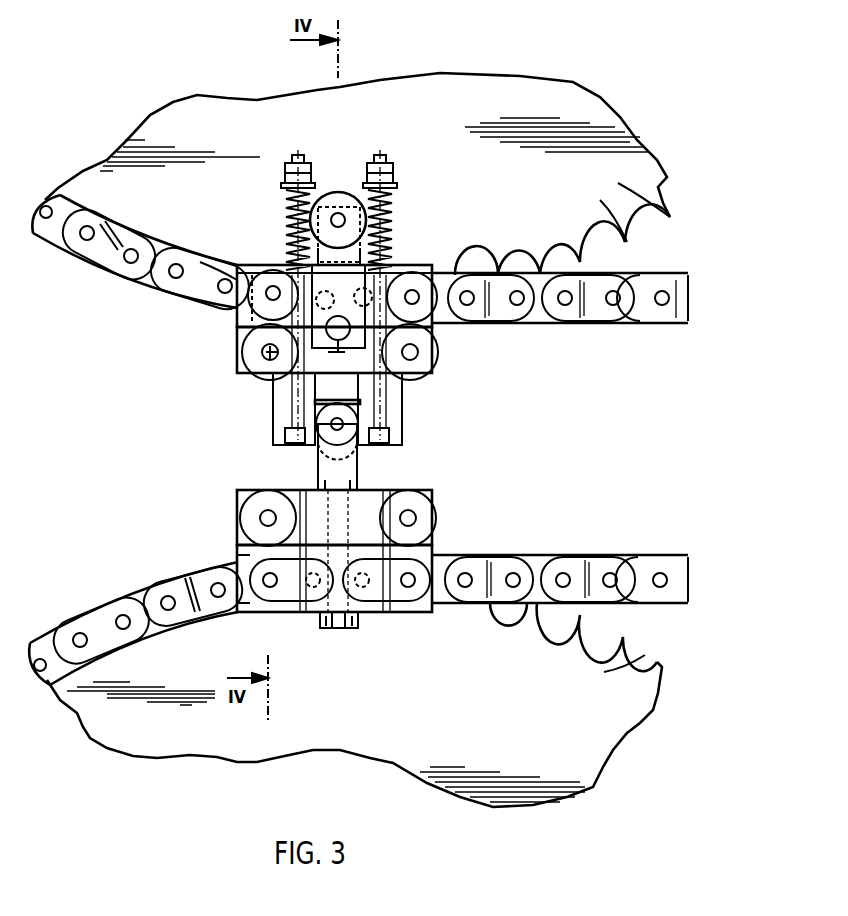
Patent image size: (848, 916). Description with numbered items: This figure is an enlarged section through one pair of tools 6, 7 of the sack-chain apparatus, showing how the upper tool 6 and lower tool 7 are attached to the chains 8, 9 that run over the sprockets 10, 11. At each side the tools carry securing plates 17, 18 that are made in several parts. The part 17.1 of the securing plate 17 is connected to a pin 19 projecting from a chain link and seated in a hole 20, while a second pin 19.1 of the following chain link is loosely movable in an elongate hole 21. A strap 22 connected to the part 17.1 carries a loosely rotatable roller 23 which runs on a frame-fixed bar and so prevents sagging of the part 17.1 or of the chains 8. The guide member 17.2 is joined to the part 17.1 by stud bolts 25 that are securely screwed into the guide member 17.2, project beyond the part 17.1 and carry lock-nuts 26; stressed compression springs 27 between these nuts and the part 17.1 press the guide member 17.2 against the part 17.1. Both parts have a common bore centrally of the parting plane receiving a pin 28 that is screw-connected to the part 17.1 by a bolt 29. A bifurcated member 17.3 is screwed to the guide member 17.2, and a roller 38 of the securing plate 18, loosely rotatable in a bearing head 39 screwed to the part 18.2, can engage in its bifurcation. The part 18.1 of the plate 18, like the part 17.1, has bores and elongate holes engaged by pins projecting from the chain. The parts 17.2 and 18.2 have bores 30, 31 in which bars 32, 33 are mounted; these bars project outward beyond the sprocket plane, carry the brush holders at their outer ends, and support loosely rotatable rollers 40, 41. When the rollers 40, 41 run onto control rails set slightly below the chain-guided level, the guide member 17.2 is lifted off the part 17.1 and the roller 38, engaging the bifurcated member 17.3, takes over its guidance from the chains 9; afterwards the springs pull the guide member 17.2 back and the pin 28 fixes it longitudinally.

The tool 6 is at (470, 146).
The tool 7 is at (470, 684).
The chain 8 is at (645, 324).
The chain 9 is at (606, 558).
The sprocket 10 is at (629, 192).
The sprocket 11 is at (610, 671).
The securing plate 17 is at (552, 382).
The part 17.1 is at (420, 265).
The guide member 17.2 is at (438, 376).
The bifurcated member 17.3 is at (398, 417).
The securing plate 18 is at (534, 514).
The part 18.1 is at (432, 549).
The part 18.2 is at (374, 494).
The pin 19 is at (450, 276).
The second pin 19.1 is at (270, 287).
The hole 20 is at (474, 298).
The elongate hole 21 is at (262, 280).
The strap 22 is at (316, 302).
The roller 23 is at (338, 200).
The stud bolt 25 is at (297, 155).
The lock-nut 26 is at (394, 180).
The compression spring 27 is at (392, 210).
The pin 28 is at (345, 338).
The bolt 29 is at (411, 296).
The bore 30 is at (262, 352).
The bore 31 is at (418, 352).
The bar 32 is at (262, 347).
The bar 33 is at (416, 346).
The roller 38 is at (318, 402).
The bearing head 39 is at (330, 441).
The roller 40 is at (424, 375).
The roller 41 is at (262, 380).